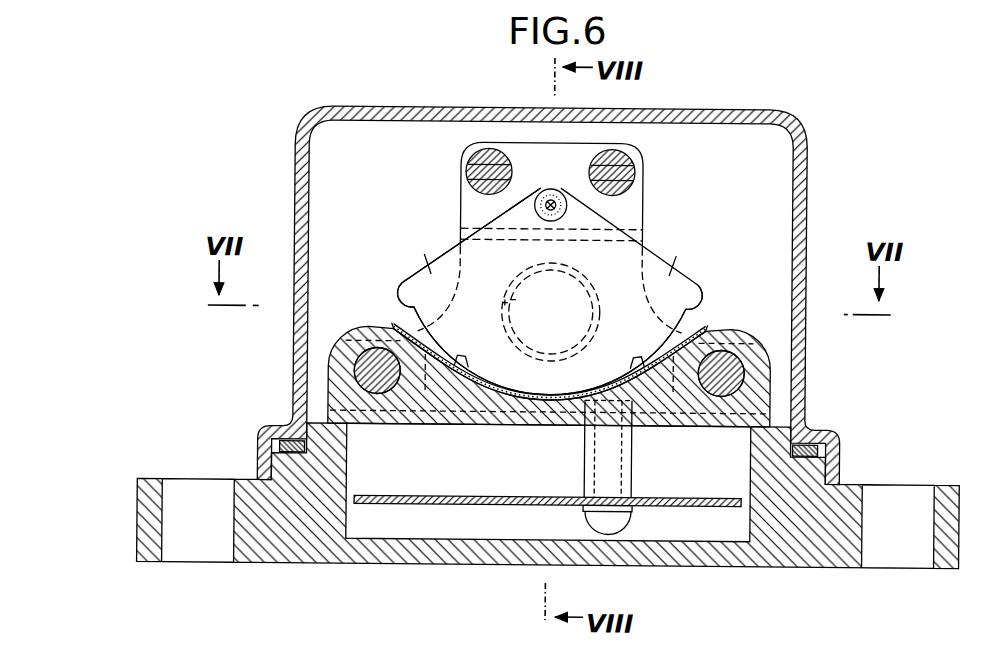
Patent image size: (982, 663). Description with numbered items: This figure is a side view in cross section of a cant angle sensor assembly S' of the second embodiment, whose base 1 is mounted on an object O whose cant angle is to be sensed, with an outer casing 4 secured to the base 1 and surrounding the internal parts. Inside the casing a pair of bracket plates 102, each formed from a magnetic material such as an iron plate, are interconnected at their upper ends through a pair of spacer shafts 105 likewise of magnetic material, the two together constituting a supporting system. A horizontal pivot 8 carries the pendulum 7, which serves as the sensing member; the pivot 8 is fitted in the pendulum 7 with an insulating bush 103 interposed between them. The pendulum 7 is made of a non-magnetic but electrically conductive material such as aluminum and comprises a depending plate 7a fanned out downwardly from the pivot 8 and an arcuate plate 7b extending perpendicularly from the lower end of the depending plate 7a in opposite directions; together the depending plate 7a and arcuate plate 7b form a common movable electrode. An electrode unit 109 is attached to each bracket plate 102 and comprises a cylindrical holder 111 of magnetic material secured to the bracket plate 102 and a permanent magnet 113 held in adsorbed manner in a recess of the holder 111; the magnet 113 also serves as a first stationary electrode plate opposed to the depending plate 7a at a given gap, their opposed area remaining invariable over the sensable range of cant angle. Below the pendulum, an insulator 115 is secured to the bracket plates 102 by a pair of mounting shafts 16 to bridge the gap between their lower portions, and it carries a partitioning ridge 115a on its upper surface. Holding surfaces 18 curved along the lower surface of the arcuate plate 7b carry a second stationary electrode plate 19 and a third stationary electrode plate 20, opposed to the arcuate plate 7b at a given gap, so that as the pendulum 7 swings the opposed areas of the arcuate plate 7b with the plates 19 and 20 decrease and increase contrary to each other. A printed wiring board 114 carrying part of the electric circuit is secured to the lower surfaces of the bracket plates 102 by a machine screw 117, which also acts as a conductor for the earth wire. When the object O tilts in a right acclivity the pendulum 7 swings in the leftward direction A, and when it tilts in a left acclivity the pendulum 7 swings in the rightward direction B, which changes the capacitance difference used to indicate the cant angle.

The base 1 is at (290, 565).
The outer casing 4 is at (382, 108).
The cover corner S' is at (817, 98).
The pendulum 7 is at (658, 261).
The depending plate 7a is at (430, 270).
The arcuate plate 7b is at (552, 393).
The pivot 8 is at (545, 197).
The mounting shafts 16 is at (375, 368).
The holding surfaces 18 is at (447, 366).
The second stationary electrode plate 19 is at (462, 357).
The third stationary electrode plate 20 is at (638, 357).
The bracket plates 102 is at (642, 213).
The insulating bush 103 is at (553, 195).
The spacer shafts 105 is at (464, 166).
The electrode unit 109 is at (601, 310).
The cylindrical holder 111 is at (566, 284).
The permanent magnet 113 is at (509, 299).
The printed wiring board 114 is at (661, 497).
The insulator 115 is at (458, 400).
The partitioning ridge 115a is at (552, 398).
The machine screw 117 is at (628, 522).
The leftward direction A is at (402, 288).
The rightward direction B is at (697, 288).
The object O is at (978, 565).